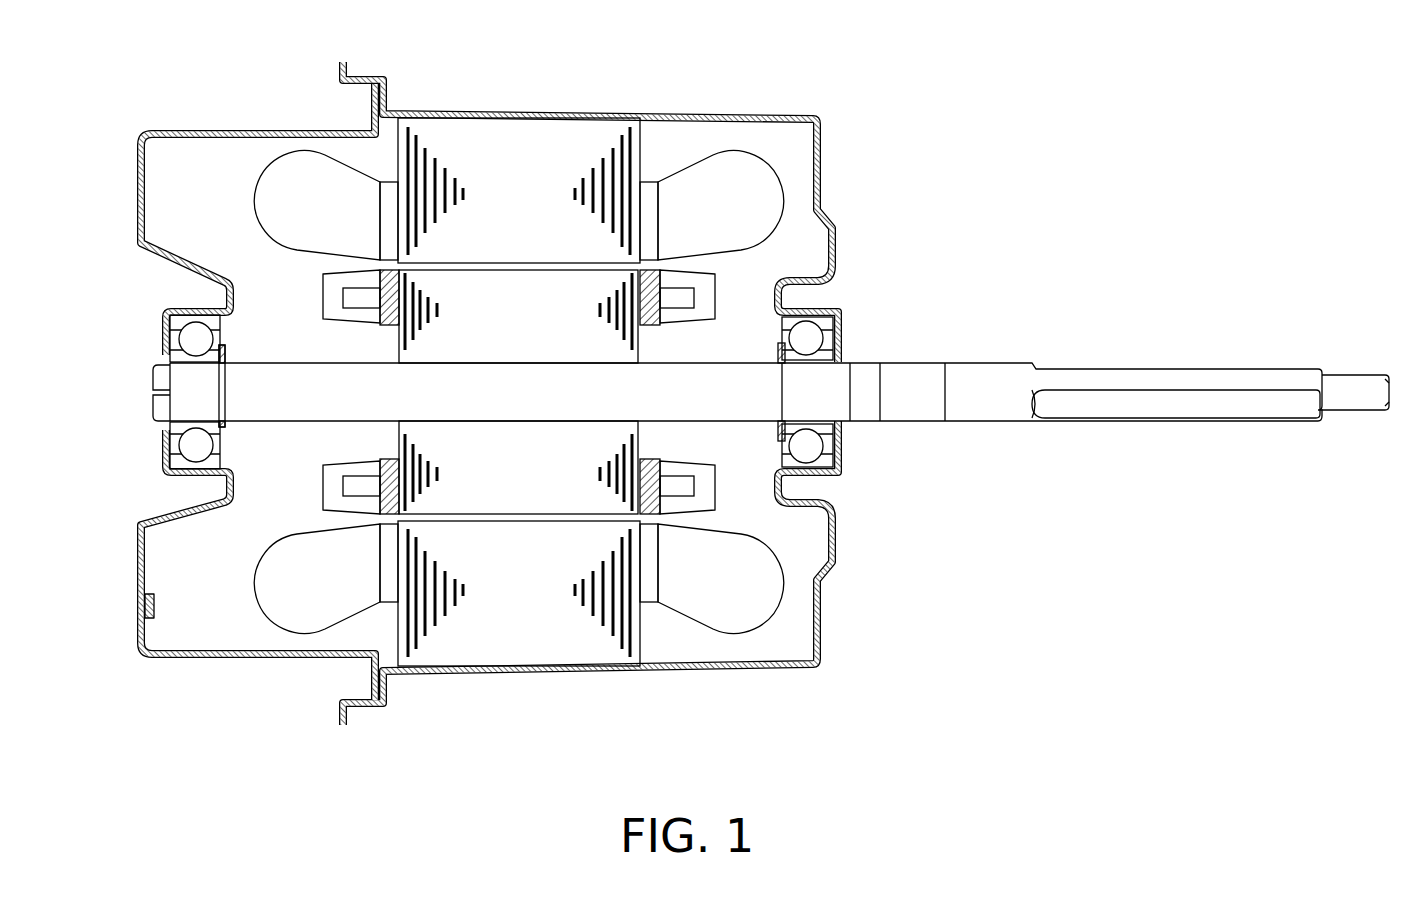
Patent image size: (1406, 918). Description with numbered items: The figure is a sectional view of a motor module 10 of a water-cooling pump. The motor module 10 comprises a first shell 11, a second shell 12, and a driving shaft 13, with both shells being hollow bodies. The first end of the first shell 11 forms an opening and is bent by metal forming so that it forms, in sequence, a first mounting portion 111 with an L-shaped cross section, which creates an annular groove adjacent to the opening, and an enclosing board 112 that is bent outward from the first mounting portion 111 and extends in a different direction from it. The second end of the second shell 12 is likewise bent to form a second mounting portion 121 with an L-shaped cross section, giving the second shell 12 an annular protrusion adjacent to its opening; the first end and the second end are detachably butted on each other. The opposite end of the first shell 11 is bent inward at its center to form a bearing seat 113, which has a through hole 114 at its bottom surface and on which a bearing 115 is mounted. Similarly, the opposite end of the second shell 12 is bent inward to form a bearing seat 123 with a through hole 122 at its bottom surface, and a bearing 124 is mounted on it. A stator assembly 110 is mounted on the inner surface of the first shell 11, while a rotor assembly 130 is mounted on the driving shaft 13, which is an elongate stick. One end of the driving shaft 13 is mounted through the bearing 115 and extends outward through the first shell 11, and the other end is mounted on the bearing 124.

The motor module 10 is at (772, 86).
The first shell 11 is at (822, 143).
The second shell 12 is at (248, 130).
The driving shaft 13 is at (982, 382).
The stator assembly 110 is at (475, 140).
The rotor assembly 130 is at (528, 285).
The first mounting portion 111 is at (386, 706).
The enclosing board 112 is at (340, 716).
The bearing seat 113 is at (840, 311).
The through hole 114 is at (850, 420).
The bearing 115 is at (840, 474).
The second mounting portion 121 is at (373, 696).
The through hole 122 is at (166, 360).
The bearing seat 123 is at (165, 308).
The bearing 124 is at (165, 462).